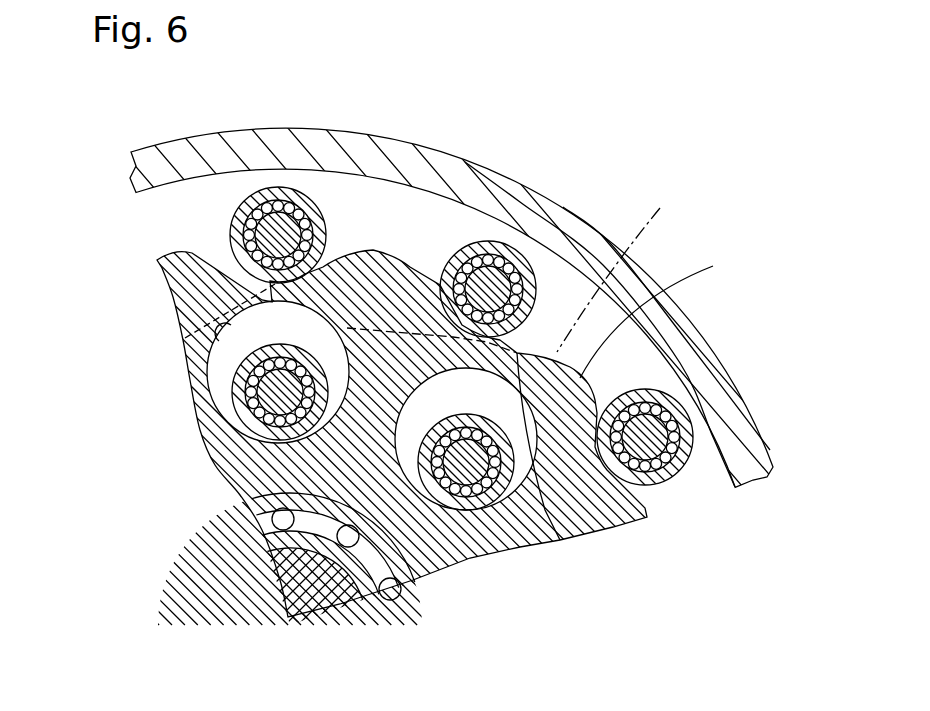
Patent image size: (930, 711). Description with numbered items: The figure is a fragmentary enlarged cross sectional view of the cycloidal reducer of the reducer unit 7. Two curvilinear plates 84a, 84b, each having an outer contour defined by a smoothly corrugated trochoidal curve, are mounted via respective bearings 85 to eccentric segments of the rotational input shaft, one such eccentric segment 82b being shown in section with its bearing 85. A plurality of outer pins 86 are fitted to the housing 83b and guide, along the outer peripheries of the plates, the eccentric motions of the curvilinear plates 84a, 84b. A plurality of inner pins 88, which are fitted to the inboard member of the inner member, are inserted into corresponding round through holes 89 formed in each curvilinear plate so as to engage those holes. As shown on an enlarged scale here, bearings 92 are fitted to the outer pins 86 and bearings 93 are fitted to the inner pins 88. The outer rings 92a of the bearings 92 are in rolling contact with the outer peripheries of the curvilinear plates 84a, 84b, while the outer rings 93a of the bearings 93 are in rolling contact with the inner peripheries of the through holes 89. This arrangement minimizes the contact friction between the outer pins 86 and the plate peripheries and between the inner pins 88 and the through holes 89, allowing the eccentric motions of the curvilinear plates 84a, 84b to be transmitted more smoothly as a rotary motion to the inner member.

The reducer unit 7 is at (215, 126).
The housing 83b is at (277, 138).
The outer pins 86 is at (285, 227).
The bearings 92 is at (507, 263).
The outer rings 92a is at (523, 267).
The curvilinear plate 84a is at (624, 266).
The curvilinear plate 84b is at (671, 312).
The through holes 89 is at (181, 337).
The outer rings 93a is at (247, 367).
The bearings 93 is at (253, 403).
The inner pins 88 is at (273, 398).
The eccentric segment 82b is at (325, 588).
The bearings 85 is at (382, 585).